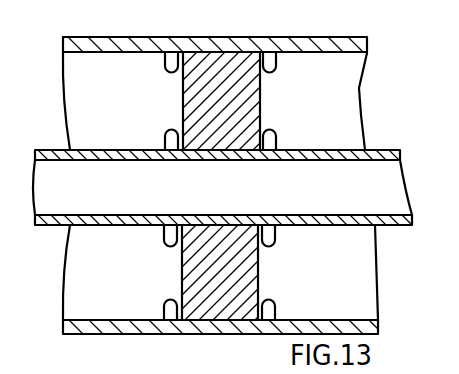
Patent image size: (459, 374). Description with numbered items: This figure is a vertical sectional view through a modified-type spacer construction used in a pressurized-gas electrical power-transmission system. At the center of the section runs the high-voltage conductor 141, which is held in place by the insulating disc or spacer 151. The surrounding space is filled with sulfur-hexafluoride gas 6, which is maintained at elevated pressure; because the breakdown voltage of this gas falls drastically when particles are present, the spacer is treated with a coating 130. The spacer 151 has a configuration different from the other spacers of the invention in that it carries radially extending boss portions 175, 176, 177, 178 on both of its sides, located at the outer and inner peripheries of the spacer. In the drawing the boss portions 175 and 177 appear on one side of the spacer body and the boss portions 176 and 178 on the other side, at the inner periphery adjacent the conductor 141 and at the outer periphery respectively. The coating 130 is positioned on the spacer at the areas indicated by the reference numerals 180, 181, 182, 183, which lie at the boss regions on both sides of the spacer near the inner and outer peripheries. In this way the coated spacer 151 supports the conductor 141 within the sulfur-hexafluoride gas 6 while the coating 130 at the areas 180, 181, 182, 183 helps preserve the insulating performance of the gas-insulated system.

The sulfur-hexafluoride gas 6 is at (110, 70).
The coating 130 is at (262, 52).
The high-voltage conductor 141 is at (114, 150).
The spacer 151 is at (258, 273).
The boss portion 175 is at (172, 133).
The boss portion 176 is at (270, 133).
The boss portion 177 is at (174, 73).
The boss portion 178 is at (270, 73).
The coating area 180 is at (171, 302).
The coating area 181 is at (172, 246).
The coating area 182 is at (268, 302).
The coating area 183 is at (267, 246).